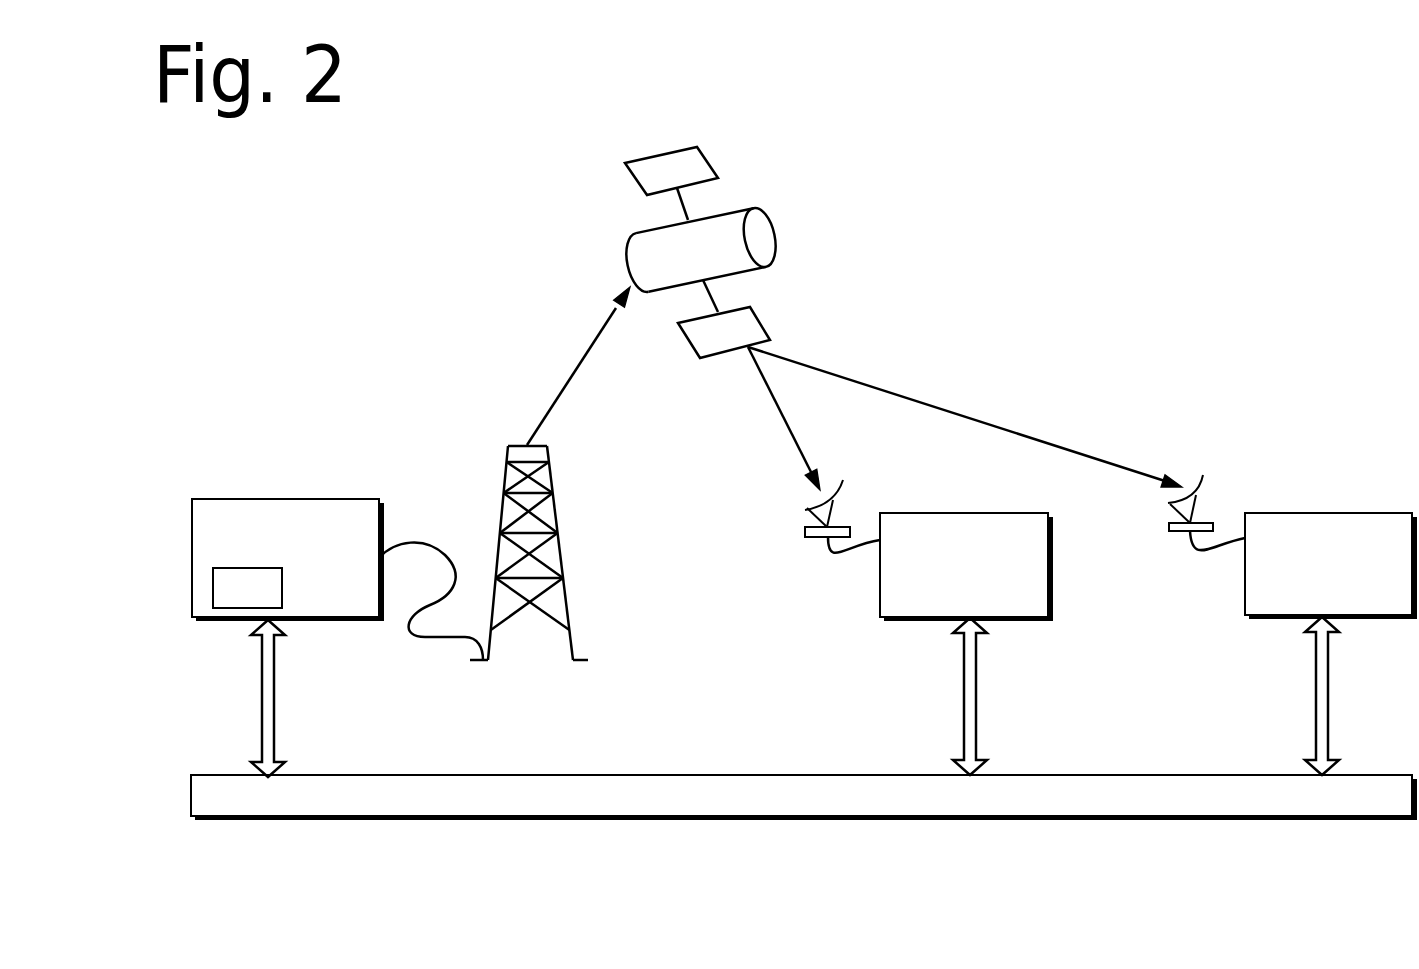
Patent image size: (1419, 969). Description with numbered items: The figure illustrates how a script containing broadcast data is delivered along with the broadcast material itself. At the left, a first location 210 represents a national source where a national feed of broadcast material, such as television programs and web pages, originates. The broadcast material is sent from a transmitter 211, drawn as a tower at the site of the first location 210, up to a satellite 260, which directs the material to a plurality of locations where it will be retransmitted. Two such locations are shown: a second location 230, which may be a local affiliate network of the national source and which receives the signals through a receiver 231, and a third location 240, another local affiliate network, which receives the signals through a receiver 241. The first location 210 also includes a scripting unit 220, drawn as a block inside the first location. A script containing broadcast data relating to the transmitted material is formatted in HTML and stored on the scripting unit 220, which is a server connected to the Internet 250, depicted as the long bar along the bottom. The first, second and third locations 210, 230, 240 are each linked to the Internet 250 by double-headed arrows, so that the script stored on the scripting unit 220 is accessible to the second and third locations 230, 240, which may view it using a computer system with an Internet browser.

The first location 210 is at (288, 560).
The transmitter 211 is at (568, 593).
The scripting unit 220 is at (279, 606).
The second location 230 is at (1035, 611).
The receiver 231 is at (835, 542).
The third location 240 is at (1407, 611).
The receiver 241 is at (1206, 544).
The Internet 250 is at (1402, 808).
The satellite 260 is at (735, 252).